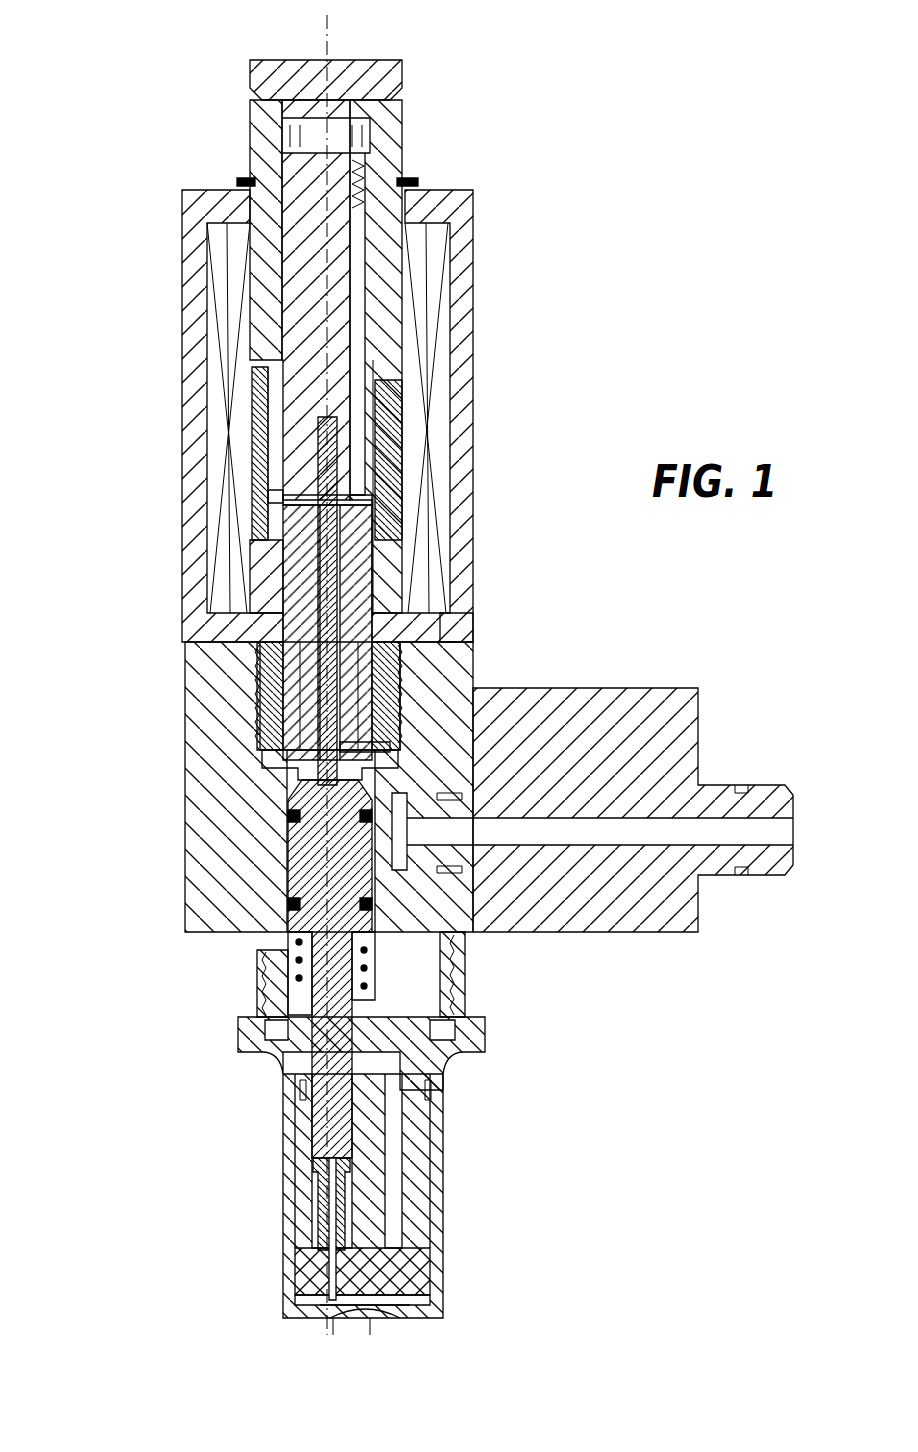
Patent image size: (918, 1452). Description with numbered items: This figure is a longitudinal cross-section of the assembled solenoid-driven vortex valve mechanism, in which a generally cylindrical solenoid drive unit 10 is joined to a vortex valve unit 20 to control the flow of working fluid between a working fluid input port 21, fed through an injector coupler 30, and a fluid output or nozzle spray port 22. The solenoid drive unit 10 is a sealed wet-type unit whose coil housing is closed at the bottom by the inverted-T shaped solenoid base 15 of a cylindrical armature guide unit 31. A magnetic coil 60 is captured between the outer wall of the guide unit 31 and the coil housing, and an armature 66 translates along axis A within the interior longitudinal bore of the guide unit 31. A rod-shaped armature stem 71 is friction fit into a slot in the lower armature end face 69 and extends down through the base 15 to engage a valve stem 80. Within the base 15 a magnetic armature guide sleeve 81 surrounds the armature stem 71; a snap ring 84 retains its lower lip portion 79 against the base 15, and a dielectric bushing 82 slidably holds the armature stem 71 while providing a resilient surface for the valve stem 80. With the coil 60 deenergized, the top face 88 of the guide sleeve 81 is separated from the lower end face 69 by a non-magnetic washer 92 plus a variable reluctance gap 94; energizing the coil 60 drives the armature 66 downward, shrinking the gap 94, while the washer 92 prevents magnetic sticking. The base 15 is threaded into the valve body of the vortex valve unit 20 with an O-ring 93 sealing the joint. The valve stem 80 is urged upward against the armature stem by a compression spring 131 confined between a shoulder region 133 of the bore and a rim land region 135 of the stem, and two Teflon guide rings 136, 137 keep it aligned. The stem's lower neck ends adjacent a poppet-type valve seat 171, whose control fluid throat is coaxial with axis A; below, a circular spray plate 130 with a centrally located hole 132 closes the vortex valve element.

The axis A is at (327, 36).
The solenoid drive unit 10 is at (478, 351).
The solenoid base 15 is at (474, 624).
The vortex valve unit 20 is at (176, 762).
The working fluid input port 21 is at (455, 905).
The fluid output or nozzle spray port 22 is at (344, 1336).
The injector coupler 30 is at (706, 740).
The armature guide unit 31 is at (408, 152).
The magnetic coil 60 is at (430, 240).
The armature 66 is at (356, 148).
The lower armature end face 69 is at (385, 470).
The armature stem 71 is at (322, 558).
The lower lip portion 79 is at (300, 736).
The valve stem 80 is at (290, 878).
The armature guide sleeve 81 is at (382, 576).
The bushing 82 is at (296, 698).
The snap ring 84 is at (392, 738).
The top face 88 is at (265, 530).
The washer 92 is at (370, 500).
The O-ring 93 is at (400, 638).
The variable reluctance gap 94 is at (298, 492).
The spray plate 130 is at (444, 1290).
The compression spring 131 is at (296, 968).
The centrally located hole 132 is at (398, 1318).
The shoulder region 133 is at (270, 1005).
The rim land region 135 is at (278, 935).
The guide ring 136 is at (288, 900).
The guide ring 137 is at (288, 816).
The valve seat 171 is at (312, 1216).